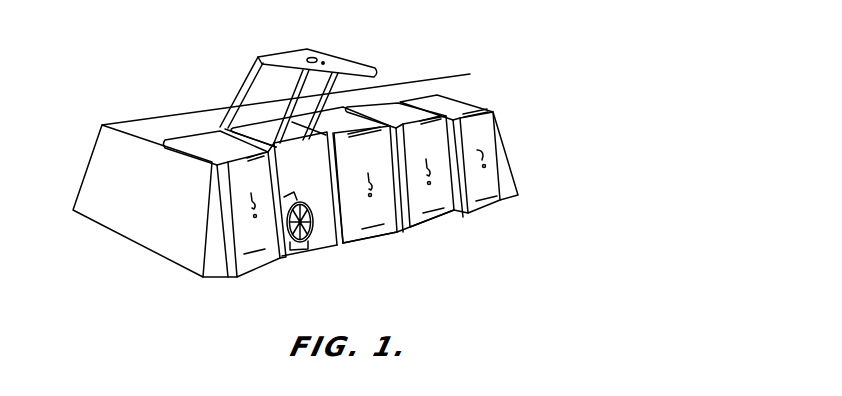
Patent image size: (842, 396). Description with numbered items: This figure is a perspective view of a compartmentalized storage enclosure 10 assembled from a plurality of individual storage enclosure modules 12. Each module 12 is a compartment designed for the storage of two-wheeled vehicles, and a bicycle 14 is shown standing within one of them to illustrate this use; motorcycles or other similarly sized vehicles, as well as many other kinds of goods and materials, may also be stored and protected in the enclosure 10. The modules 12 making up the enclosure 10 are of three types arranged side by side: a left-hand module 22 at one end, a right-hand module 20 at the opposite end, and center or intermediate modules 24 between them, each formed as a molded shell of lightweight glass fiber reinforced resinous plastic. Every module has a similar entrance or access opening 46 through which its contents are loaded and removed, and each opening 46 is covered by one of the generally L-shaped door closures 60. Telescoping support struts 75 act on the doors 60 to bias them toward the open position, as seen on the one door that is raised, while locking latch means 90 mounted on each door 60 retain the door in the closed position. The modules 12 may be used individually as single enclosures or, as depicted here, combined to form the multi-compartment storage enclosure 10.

The storage enclosure 10 is at (479, 81).
The modules 12 is at (145, 126).
The bicycle 14 is at (305, 250).
The right-hand module 20 is at (512, 144).
The left-hand module 22 is at (156, 238).
The center or intermediate modules 24 is at (422, 230).
The entrance or access opening 46 is at (318, 192).
The L-shaped door closures 60 is at (344, 70).
The telescoping support struts 75 is at (326, 91).
The locking latch means 90 is at (323, 53).